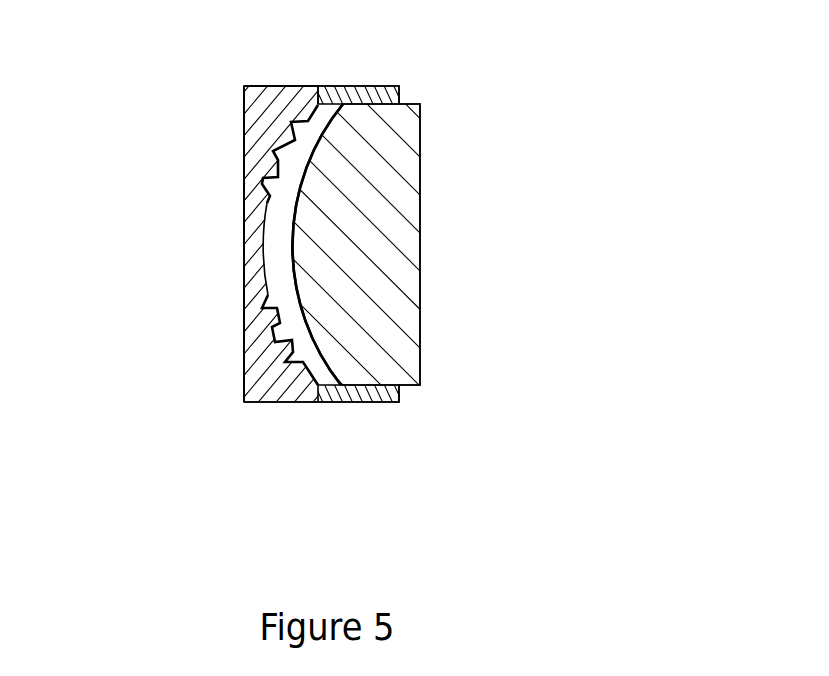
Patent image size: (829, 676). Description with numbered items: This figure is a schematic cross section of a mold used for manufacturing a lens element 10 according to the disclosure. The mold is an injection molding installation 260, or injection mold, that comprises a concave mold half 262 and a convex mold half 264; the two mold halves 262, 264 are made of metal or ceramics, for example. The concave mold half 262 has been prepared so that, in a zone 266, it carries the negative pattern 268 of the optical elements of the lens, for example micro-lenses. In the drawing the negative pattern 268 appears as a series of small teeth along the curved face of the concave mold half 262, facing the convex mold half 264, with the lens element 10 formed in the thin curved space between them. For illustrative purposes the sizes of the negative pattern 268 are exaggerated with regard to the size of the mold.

The injection molding installation 260 is at (541, 167).
The concave mold half 262 is at (241, 355).
The convex mold half 264 is at (380, 280).
The zone 266 is at (221, 89).
The negative pattern 268 is at (249, 184).
The lens element 10 is at (282, 239).